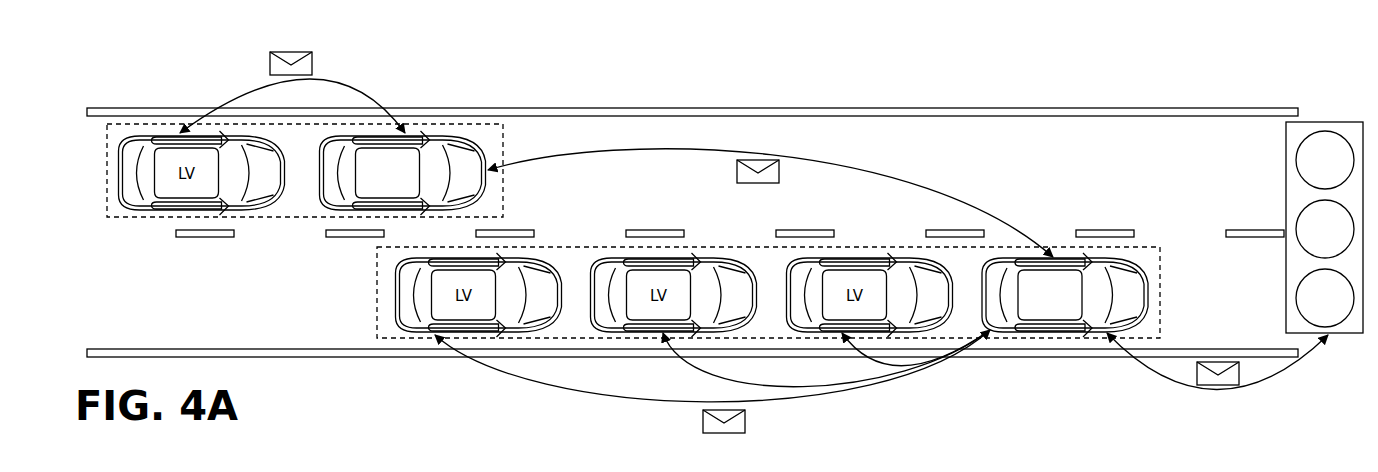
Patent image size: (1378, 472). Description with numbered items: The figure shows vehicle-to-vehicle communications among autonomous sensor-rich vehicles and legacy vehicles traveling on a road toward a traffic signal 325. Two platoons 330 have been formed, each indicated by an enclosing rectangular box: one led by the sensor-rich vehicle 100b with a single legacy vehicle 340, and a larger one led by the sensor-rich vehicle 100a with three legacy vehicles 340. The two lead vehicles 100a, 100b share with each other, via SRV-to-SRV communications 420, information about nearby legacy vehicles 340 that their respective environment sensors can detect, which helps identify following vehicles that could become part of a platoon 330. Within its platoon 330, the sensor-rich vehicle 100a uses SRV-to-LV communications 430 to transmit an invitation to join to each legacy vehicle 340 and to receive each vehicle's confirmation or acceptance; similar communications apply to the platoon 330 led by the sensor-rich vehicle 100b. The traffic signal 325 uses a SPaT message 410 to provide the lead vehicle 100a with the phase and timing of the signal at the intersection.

The sensor-rich vehicle 100a is at (1013, 331).
The sensor-rich vehicle 100b is at (447, 137).
The traffic signal 325 is at (1318, 122).
The platoon 330 is at (143, 217).
The legacy vehicle 340 is at (162, 137).
The SPaT message 410 is at (1222, 393).
The SRV-to-SRV communications 420 is at (795, 157).
The SRV-to-LV communications 430 is at (358, 92).